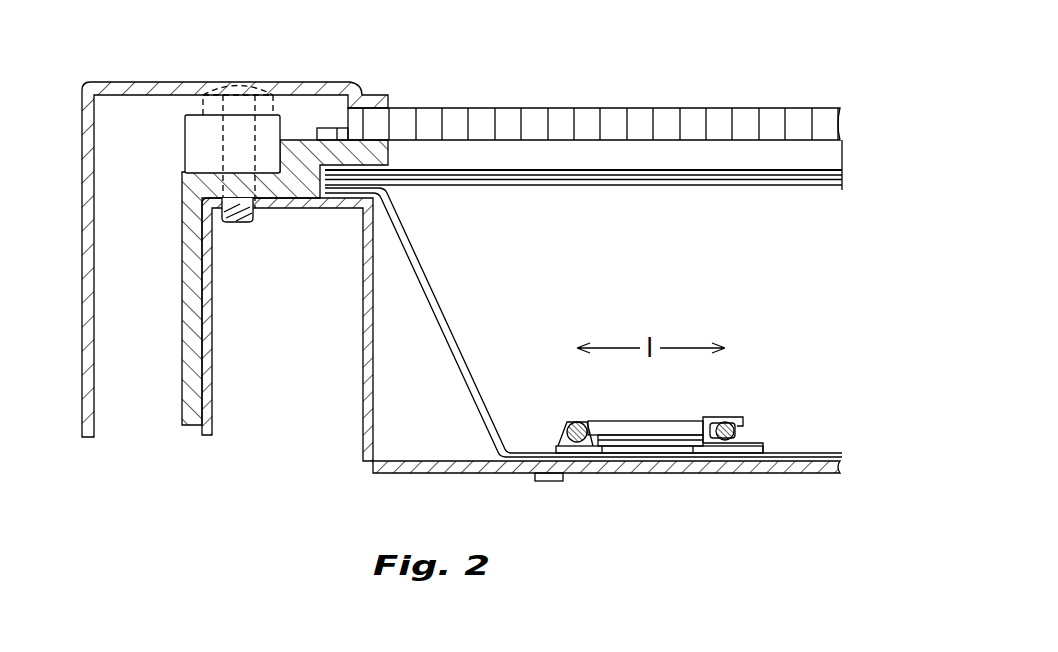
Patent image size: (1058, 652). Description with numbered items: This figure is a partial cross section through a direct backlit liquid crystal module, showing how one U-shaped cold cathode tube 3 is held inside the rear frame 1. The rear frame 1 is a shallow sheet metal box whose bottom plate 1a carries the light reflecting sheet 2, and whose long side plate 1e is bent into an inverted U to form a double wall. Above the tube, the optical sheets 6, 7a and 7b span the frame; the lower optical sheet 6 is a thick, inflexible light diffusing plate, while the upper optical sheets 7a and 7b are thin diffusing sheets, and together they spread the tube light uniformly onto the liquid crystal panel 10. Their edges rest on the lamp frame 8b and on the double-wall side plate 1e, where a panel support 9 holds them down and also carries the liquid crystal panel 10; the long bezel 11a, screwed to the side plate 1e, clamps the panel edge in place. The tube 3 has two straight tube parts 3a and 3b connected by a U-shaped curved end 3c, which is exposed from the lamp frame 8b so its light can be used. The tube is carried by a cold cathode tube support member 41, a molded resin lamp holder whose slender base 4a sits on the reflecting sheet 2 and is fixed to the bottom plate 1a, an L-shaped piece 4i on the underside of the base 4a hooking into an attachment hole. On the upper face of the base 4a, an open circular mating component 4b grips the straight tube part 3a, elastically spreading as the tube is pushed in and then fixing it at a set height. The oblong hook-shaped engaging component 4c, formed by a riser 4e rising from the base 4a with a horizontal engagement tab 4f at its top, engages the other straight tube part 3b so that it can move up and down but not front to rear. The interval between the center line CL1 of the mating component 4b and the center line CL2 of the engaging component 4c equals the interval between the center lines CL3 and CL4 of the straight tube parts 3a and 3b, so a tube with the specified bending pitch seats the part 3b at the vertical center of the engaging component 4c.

The long bezel 11a is at (128, 82).
The panel support 9 is at (305, 138).
The liquid crystal panel 10 is at (556, 107).
The lamp frame 8b is at (485, 215).
The optical sheet 7b is at (608, 170).
The optical sheet 7a is at (662, 177).
The optical sheet 6 is at (714, 185).
The light reflecting sheet 2 is at (456, 355).
The rear frame 1 is at (521, 366).
The bottom plate 1a is at (601, 467).
The side plate 1e is at (213, 348).
The slender base 4a is at (645, 453).
The L-shaped piece 4i is at (551, 482).
The open circular mating component 4b is at (564, 430).
The straight tube part 3a is at (572, 422).
The U-shaped cold cathode tube 3 is at (676, 407).
The U-shaped curved end 3c is at (642, 421).
The oblong hook-shaped engaging component 4c is at (712, 403).
The horizontal engagement tab 4f is at (727, 418).
The straight tube part 3b is at (735, 430).
The riser 4e is at (703, 441).
The cold cathode tube support member 41 is at (823, 431).
The center line CL1 is at (577, 404).
The center line CL2 is at (725, 402).
The center line CL3 is at (580, 422).
The center line CL4 is at (737, 420).